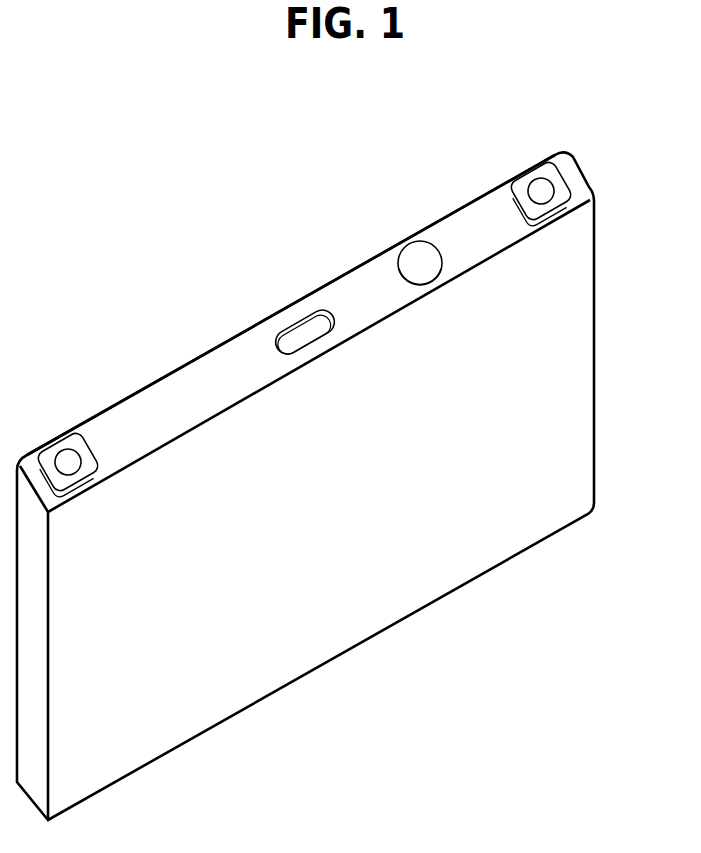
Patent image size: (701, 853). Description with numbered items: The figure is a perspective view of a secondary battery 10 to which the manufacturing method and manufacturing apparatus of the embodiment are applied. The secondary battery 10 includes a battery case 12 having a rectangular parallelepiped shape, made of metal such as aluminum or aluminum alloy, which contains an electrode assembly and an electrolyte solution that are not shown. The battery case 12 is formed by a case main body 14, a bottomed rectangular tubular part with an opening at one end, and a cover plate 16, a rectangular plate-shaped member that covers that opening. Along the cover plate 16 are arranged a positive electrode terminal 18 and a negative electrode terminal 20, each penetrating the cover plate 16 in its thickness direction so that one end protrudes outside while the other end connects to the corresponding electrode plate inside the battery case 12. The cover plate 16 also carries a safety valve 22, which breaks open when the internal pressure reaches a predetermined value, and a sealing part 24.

The secondary battery 10 is at (241, 248).
The battery case 12 is at (596, 355).
The case main body 14 is at (490, 517).
The cover plate 16 is at (180, 395).
The positive electrode terminal 18 is at (70, 447).
The negative electrode terminal 20 is at (550, 160).
The safety valve 22 is at (310, 305).
The sealing part 24 is at (420, 241).